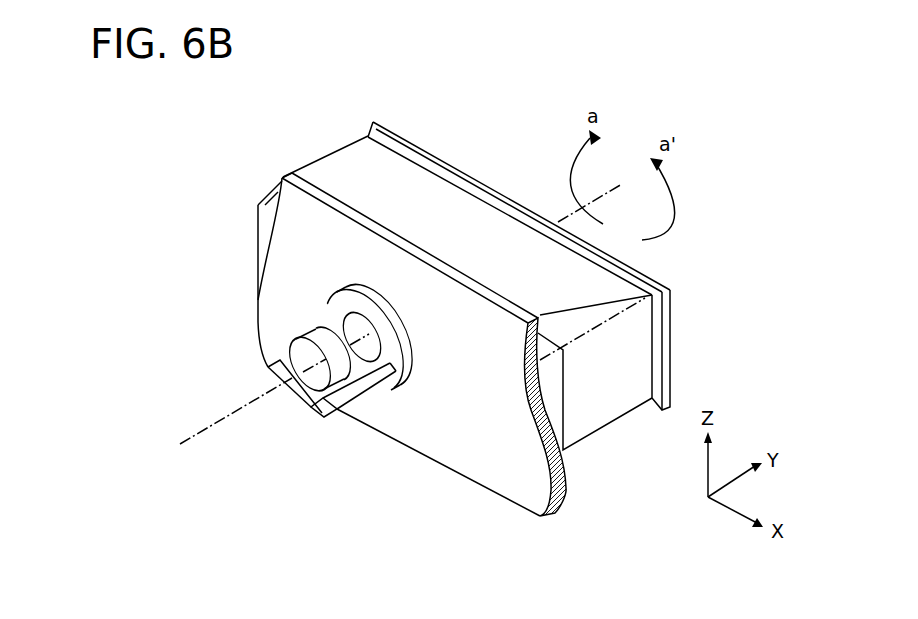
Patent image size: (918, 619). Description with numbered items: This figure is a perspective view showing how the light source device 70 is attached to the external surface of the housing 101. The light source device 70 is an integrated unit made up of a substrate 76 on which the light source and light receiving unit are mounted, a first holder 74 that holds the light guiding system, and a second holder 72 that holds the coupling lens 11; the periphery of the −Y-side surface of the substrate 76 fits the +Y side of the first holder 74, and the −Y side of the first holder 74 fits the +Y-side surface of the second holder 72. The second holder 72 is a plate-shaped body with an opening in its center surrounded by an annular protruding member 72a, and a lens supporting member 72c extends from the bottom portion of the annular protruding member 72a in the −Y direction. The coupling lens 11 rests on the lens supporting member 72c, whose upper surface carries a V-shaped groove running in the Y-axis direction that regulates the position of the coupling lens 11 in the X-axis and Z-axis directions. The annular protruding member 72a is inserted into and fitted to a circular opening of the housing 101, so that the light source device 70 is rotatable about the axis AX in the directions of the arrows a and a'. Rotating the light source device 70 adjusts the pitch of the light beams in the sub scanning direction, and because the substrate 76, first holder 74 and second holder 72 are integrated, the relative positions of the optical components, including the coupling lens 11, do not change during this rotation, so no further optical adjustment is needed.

The light source device 70 is at (475, 113).
The second holder 72 is at (272, 203).
The annular protruding member 72a is at (338, 302).
The lens supporting member 72c is at (322, 413).
The first holder 74 is at (330, 162).
The substrate 76 is at (387, 123).
The coupling lens 11 is at (310, 328).
The housing 101 is at (465, 465).
The axis AX is at (383, 323).